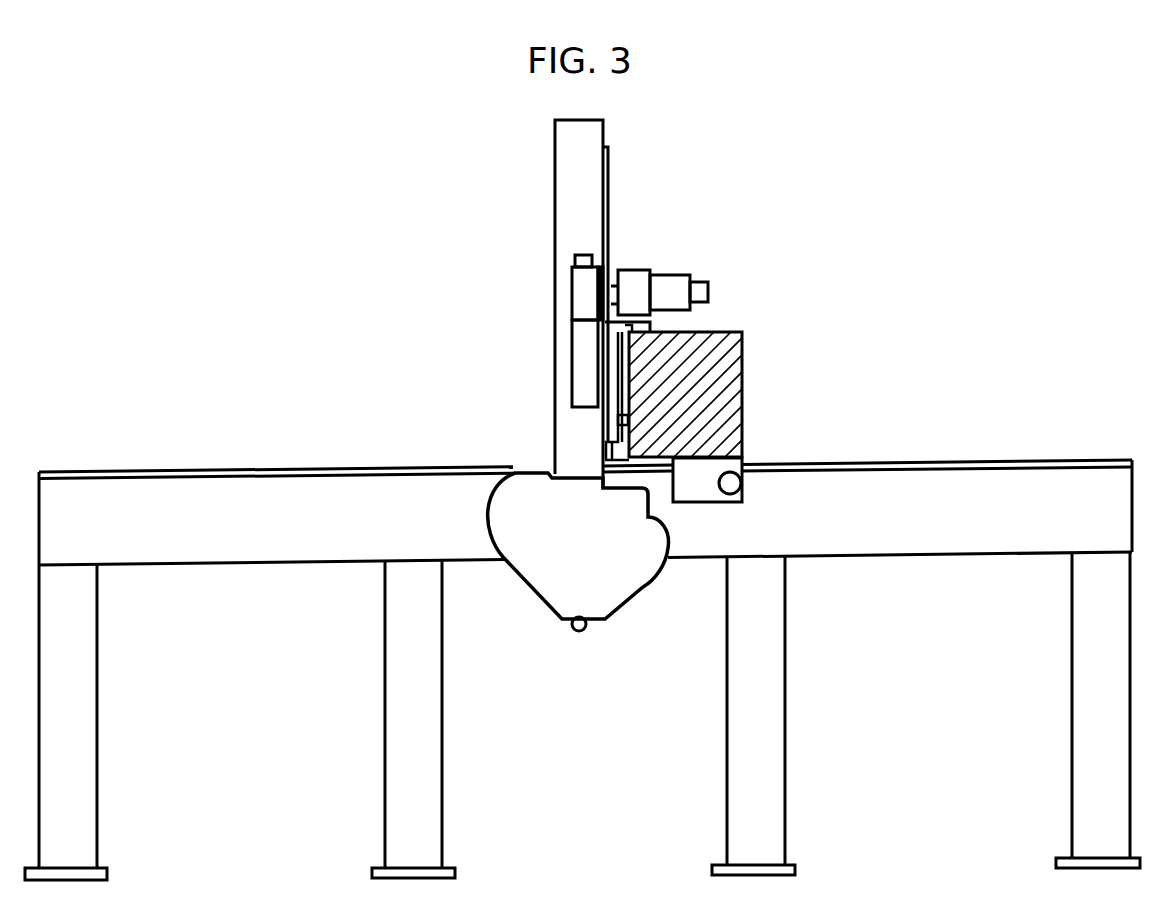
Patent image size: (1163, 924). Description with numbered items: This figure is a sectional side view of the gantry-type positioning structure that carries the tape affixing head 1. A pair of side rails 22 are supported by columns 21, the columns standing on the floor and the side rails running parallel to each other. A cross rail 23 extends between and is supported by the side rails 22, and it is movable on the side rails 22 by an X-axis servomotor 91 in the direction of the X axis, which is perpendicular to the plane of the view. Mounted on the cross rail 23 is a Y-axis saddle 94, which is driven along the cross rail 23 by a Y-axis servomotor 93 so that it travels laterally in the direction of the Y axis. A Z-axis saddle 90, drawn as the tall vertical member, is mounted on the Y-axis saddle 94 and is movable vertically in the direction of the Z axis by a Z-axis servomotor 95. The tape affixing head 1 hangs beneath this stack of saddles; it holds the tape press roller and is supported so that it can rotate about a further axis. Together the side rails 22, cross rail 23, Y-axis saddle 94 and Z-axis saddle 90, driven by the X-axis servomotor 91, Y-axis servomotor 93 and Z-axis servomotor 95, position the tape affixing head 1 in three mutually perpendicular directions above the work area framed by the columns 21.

The tape affixing head 1 is at (555, 597).
The columns 21 is at (388, 783).
The side rails 22 is at (960, 508).
The cross rail 23 is at (742, 385).
The Z-axis saddle 90 is at (600, 122).
The X-axis servomotor 91 is at (722, 495).
The Y-axis servomotor 93 is at (572, 277).
The Y-axis saddle 94 is at (614, 384).
The Z-axis servomotor 95 is at (672, 282).